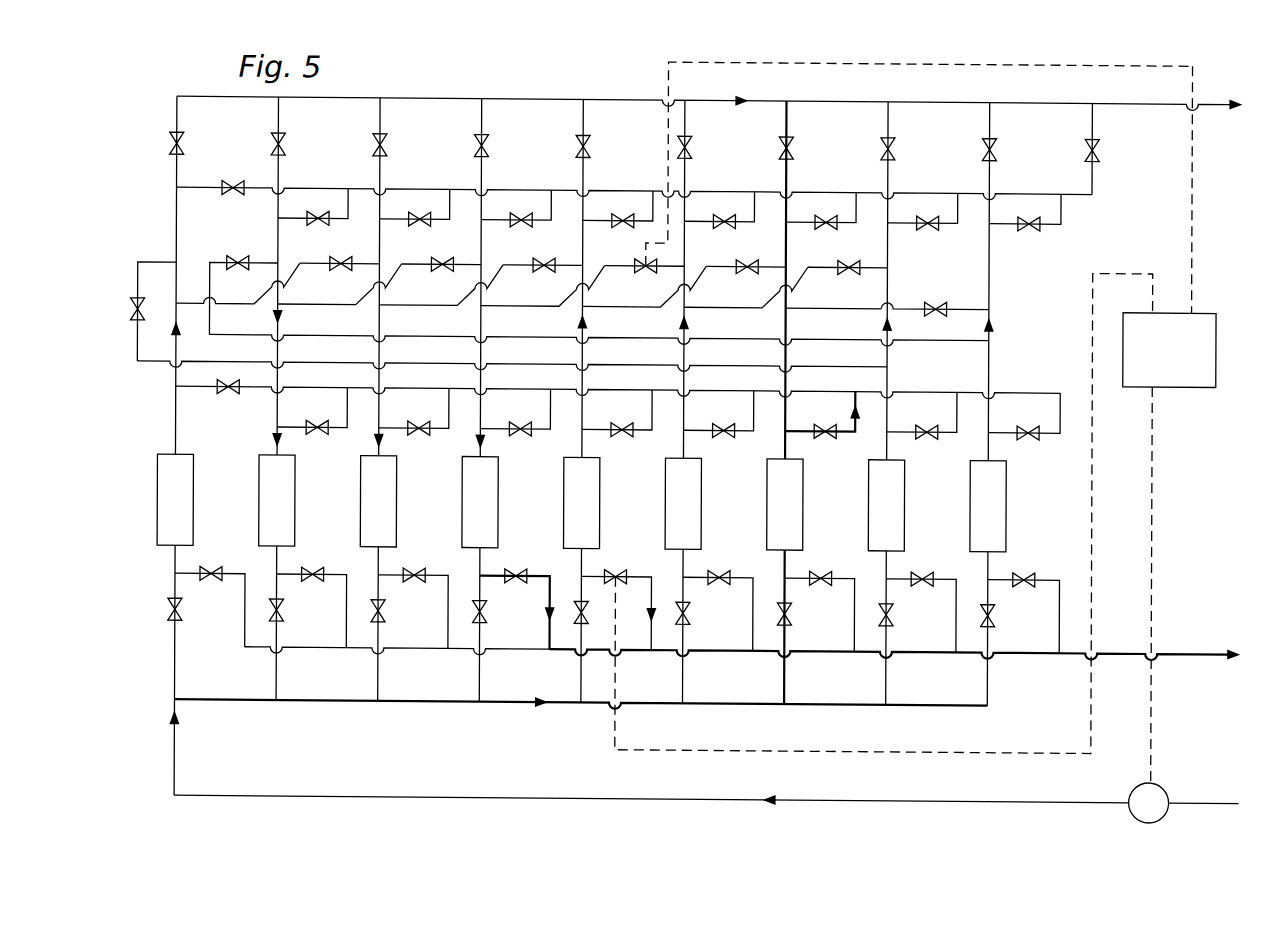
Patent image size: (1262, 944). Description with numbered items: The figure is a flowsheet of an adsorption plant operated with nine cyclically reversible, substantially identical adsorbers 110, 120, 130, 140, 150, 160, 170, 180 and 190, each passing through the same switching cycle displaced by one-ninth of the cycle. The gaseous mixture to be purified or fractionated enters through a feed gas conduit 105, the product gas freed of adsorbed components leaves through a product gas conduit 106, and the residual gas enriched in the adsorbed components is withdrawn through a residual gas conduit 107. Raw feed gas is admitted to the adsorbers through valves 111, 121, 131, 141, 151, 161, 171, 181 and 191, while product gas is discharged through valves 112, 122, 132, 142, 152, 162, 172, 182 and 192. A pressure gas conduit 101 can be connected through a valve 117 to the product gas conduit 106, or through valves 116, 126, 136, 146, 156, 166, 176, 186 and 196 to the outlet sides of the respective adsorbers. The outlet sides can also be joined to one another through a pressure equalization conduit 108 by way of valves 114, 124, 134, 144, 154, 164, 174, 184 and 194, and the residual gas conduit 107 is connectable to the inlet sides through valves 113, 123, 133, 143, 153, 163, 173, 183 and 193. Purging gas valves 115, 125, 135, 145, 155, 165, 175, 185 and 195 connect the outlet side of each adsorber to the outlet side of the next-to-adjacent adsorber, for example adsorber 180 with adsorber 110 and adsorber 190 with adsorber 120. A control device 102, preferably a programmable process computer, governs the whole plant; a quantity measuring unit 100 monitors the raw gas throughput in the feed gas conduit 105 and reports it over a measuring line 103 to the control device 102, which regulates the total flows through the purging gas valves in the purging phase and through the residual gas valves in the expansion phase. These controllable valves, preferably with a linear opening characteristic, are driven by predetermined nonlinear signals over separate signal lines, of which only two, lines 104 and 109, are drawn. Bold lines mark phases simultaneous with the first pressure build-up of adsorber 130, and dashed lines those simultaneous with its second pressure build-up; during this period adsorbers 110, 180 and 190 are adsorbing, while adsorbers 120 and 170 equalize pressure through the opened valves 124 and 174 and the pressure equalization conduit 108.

The quantity measuring unit 100 is at (1136, 792).
The pressure gas conduit 101 is at (834, 185).
The control device 102 is at (1190, 383).
The measuring line 103 is at (1152, 480).
The signal line 104 is at (1191, 212).
The feed gas conduit 105 is at (1205, 799).
The product gas conduit 106 is at (1043, 100).
The residual gas conduit 107 is at (1191, 650).
The pressure equalization conduit 108 is at (746, 390).
The signal line 109 is at (1122, 270).
The adsorber 110 is at (194, 497).
The raw feed gas valve 111 is at (168, 613).
The product gas valve 112 is at (182, 146).
The residual gas valve 113 is at (212, 588).
The pressure equalization valve 114 is at (229, 400).
The purging gas valve 115 is at (143, 306).
The pressure gas valve 116 is at (232, 200).
The valve 117 is at (1098, 147).
The adsorber 120 is at (295, 497).
The raw feed gas valve 121 is at (284, 613).
The product gas valve 122 is at (285, 147).
The residual gas valve 123 is at (315, 570).
The pressure equalization valve 124 is at (317, 441).
The purging gas valve 125 is at (238, 275).
The pressure gas valve 126 is at (318, 229).
The adsorber 130 is at (397, 497).
The raw feed gas valve 131 is at (386, 613).
The product gas valve 132 is at (387, 149).
The residual gas valve 133 is at (417, 570).
The pressure equalization valve 134 is at (419, 441).
The purging gas valve 135 is at (340, 275).
The pressure gas valve 136 is at (420, 229).
The adsorber 140 is at (498, 497).
The raw feed gas valve 141 is at (488, 613).
The product gas valve 142 is at (478, 145).
The residual gas valve 143 is at (518, 570).
The pressure equalization valve 144 is at (521, 441).
The purging gas valve 145 is at (442, 275).
The pressure gas valve 146 is at (521, 229).
The adsorber 150 is at (600, 497).
The raw feed gas valve 151 is at (578, 606).
The product gas valve 152 is at (580, 145).
The residual gas valve 153 is at (618, 570).
The pressure equalization valve 154 is at (622, 441).
The purging gas valve 155 is at (544, 275).
The pressure gas valve 156 is at (622, 230).
The adsorber 160 is at (702, 497).
The raw feed gas valve 161 is at (690, 613).
The product gas valve 162 is at (690, 149).
The residual gas valve 163 is at (722, 570).
The pressure equalization valve 164 is at (724, 441).
The purging gas valve 165 is at (645, 275).
The pressure gas valve 166 is at (724, 229).
The adsorber 170 is at (803, 497).
The raw feed gas valve 171 is at (792, 613).
The product gas valve 172 is at (792, 148).
The residual gas valve 173 is at (823, 570).
The pressure equalization valve 174 is at (826, 441).
The purging gas valve 175 is at (747, 275).
The pressure gas valve 176 is at (826, 229).
The adsorber 180 is at (905, 497).
The raw feed gas valve 181 is at (894, 613).
The product gas valve 182 is at (894, 148).
The residual gas valve 183 is at (925, 570).
The pressure equalization valve 184 is at (927, 441).
The purging gas valve 185 is at (848, 275).
The pressure gas valve 186 is at (928, 229).
The adsorber 190 is at (1006, 497).
The raw feed gas valve 191 is at (995, 613).
The product gas valve 192 is at (995, 151).
The residual gas valve 193 is at (1027, 570).
The pressure equalization valve 194 is at (1029, 441).
The purging gas valve 195 is at (935, 300).
The pressure gas valve 196 is at (1028, 229).